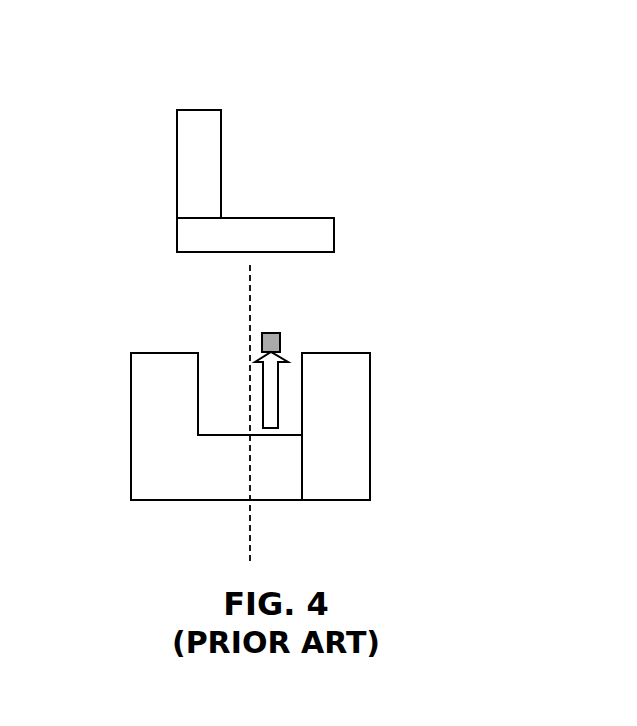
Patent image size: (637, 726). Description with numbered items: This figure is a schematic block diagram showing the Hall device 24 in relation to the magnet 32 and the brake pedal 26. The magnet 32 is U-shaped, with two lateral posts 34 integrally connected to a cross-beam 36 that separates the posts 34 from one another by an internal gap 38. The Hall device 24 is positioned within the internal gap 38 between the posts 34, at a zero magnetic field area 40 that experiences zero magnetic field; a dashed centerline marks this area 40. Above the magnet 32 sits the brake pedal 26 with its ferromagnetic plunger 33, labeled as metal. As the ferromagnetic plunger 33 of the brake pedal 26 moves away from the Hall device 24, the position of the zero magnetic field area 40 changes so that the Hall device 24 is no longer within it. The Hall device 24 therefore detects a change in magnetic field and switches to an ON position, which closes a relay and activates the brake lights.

The brake pedal 26 is at (198, 104).
The ferromagnetic plunger 33 is at (221, 132).
The zero magnetic field area 40 is at (242, 293).
The Hall device 24 is at (260, 342).
The magnet 32 is at (131, 483).
The lateral posts 34 is at (131, 373).
The internal gap 38 is at (217, 375).
The cross-beam 36 is at (227, 492).